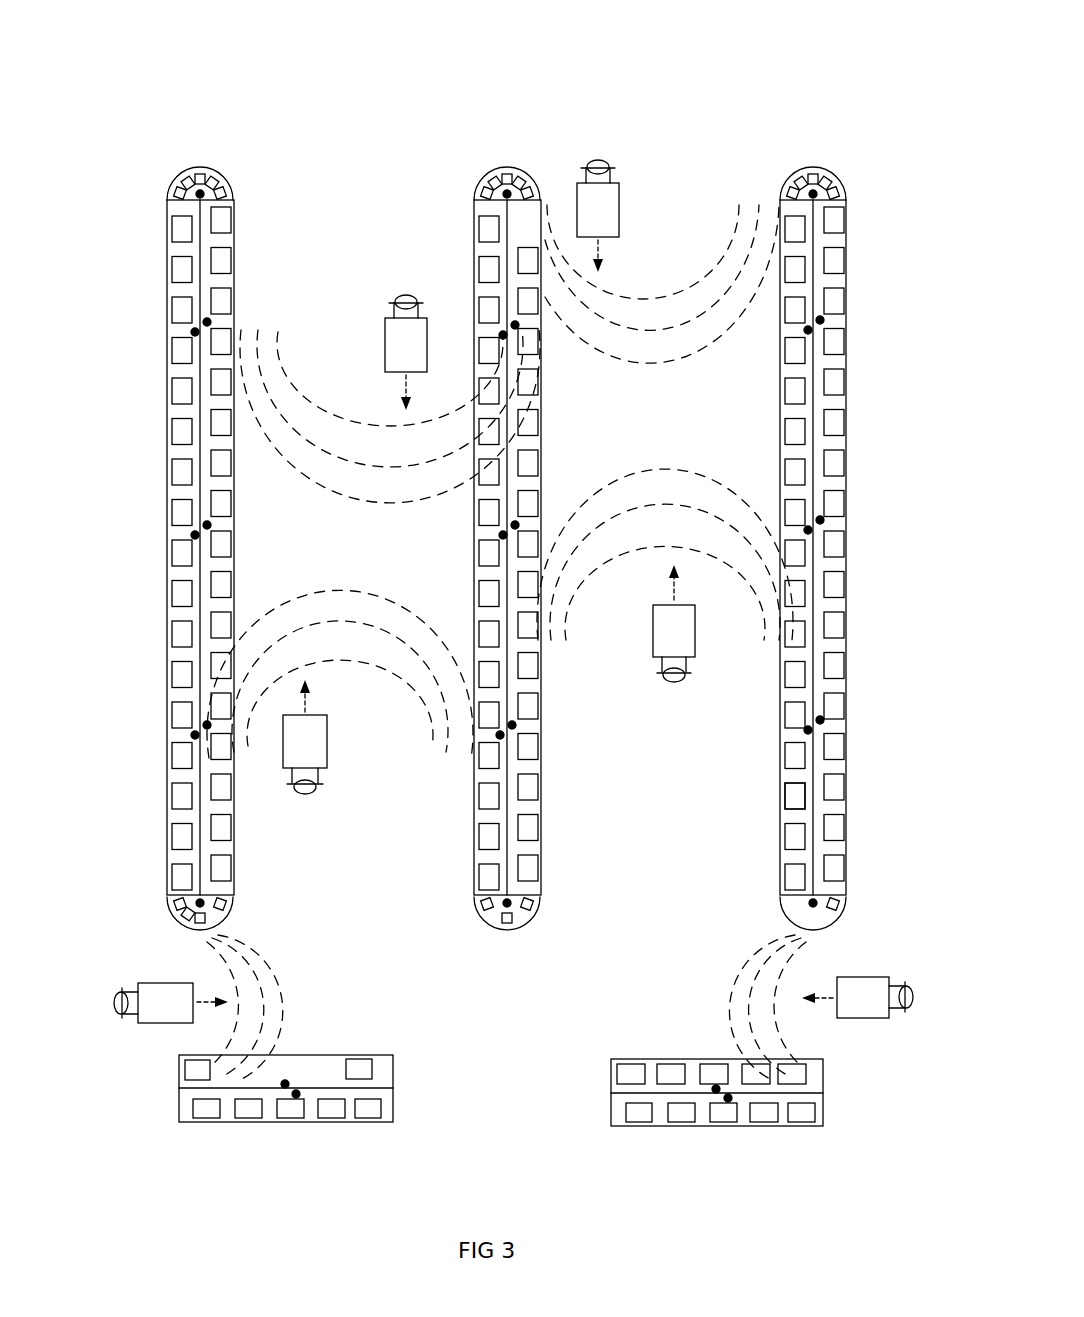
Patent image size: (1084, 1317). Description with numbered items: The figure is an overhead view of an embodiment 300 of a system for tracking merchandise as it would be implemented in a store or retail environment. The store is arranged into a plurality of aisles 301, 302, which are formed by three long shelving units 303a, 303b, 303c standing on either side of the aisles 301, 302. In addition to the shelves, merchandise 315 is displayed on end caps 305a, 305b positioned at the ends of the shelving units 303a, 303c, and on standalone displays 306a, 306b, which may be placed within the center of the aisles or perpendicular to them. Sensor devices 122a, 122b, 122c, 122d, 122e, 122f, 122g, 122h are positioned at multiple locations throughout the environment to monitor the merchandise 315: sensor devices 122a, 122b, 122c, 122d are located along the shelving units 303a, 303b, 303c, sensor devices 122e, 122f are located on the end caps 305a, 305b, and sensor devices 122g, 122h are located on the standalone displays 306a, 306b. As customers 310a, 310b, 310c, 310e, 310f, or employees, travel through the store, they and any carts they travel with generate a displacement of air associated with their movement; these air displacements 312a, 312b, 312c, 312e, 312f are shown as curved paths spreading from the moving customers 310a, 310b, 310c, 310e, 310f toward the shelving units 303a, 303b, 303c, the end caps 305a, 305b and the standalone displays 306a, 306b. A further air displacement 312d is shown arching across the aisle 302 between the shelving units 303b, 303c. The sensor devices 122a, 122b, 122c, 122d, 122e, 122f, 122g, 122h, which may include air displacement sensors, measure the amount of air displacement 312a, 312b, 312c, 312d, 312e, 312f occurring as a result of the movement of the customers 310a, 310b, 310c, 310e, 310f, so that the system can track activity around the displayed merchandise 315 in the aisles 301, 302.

The embodiment 300 is at (689, 68).
The aisle 301 is at (332, 195).
The aisle 302 is at (650, 805).
The shelving unit 303a is at (167, 245).
The shelving unit 303b is at (474, 250).
The shelving unit 303c is at (846, 250).
The end cap 305a is at (170, 915).
The end cap 305b is at (785, 908).
The standalone display 306a is at (393, 1066).
The standalone display 306b is at (616, 1061).
The customer 310a is at (327, 748).
The customer 310b is at (385, 346).
The customer 310c is at (620, 210).
The customer 310e is at (160, 1023).
The customer 310f is at (862, 1022).
The air displacement 312a is at (378, 595).
The air displacement 312b is at (308, 468).
The air displacement 312c is at (704, 343).
The travel path 312d is at (669, 478).
The air displacement 312e is at (286, 975).
The air displacement 312f is at (737, 973).
The merchandise 315 is at (795, 796).
The sensor device 122a is at (207, 322).
The sensor device 122b is at (515, 325).
The sensor device 122c is at (515, 525).
The sensor device 122d is at (818, 522).
The sensor device 122e is at (205, 908).
The sensor device 122f is at (820, 906).
The sensor device 122g is at (287, 1082).
The sensor device 122h is at (718, 1087).